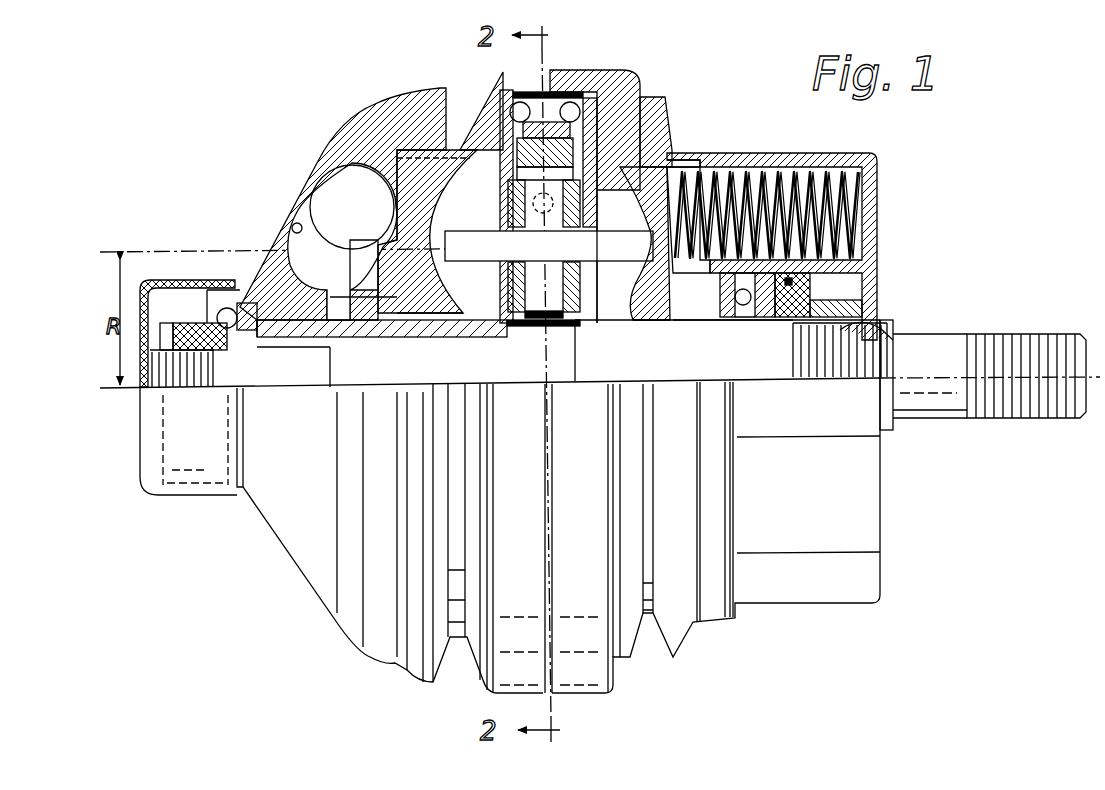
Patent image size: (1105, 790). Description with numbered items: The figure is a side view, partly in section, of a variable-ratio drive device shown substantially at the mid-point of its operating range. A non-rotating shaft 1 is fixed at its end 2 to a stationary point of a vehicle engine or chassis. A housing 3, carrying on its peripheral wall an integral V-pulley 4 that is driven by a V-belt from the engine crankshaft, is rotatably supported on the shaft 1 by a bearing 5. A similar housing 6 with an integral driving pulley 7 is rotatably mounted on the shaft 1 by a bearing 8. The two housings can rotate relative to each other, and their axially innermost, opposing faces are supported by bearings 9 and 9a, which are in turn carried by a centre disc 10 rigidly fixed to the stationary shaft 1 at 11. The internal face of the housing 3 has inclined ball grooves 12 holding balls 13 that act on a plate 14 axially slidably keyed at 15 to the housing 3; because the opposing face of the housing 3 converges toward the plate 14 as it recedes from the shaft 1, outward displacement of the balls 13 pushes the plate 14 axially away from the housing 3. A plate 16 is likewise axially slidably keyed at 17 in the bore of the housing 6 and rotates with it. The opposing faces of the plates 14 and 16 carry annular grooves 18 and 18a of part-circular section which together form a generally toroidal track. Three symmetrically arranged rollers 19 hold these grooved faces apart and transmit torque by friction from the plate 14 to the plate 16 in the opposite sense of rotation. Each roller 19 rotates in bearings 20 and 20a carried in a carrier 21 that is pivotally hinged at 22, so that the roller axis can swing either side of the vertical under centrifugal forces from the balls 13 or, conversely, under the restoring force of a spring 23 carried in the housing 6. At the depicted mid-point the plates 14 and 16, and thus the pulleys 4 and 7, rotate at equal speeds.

The non-rotating shaft 1 is at (738, 362).
The end 2 is at (1000, 336).
The housing 3 is at (330, 143).
The V-pulley 4 is at (468, 104).
The bearing 5 is at (227, 308).
The housing 6 is at (712, 152).
The driving pulley 7 is at (674, 128).
The bearing 8 is at (735, 297).
The bearing 9 is at (522, 102).
The bearing 9a is at (572, 102).
The centre disc 10 is at (614, 92).
The fixing point 11 is at (537, 326).
The inclined ball grooves 12 is at (293, 226).
The balls 13 is at (350, 210).
The plate 14 is at (428, 175).
The key 15 is at (406, 135).
The plate 16 is at (647, 187).
The key 17 is at (695, 155).
The annular groove 18 is at (640, 318).
The annular groove 18a is at (397, 300).
The rollers 19 is at (572, 251).
The bearing 20 is at (580, 210).
The bearing 20a is at (463, 313).
The carrier 21 is at (580, 313).
The hinge 22 is at (534, 206).
The spring 23 is at (803, 177).